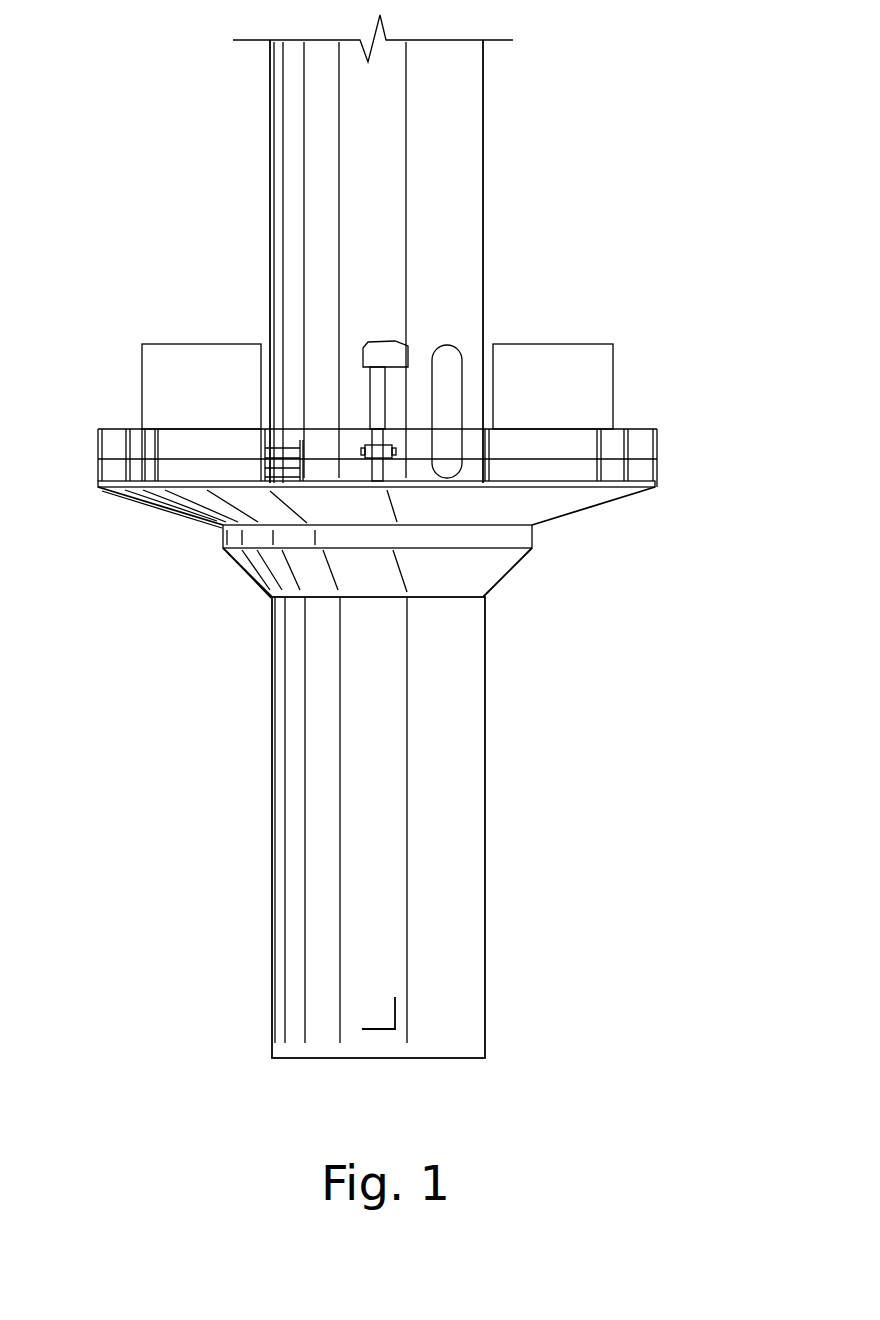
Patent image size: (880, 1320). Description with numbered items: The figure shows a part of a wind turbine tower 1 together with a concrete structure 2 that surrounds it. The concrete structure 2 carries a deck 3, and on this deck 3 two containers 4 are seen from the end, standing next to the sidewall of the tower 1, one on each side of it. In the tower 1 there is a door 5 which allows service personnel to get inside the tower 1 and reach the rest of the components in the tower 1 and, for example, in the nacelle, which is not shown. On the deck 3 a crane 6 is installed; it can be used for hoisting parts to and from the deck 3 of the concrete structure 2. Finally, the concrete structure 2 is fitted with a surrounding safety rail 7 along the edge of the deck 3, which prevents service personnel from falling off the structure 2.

The wind turbine tower 1 is at (462, 112).
The concrete structure 2 is at (487, 567).
The deck 3 is at (112, 480).
The container 4 is at (164, 352).
The door 5 is at (440, 350).
The crane 6 is at (380, 340).
The safety rail 7 is at (657, 442).